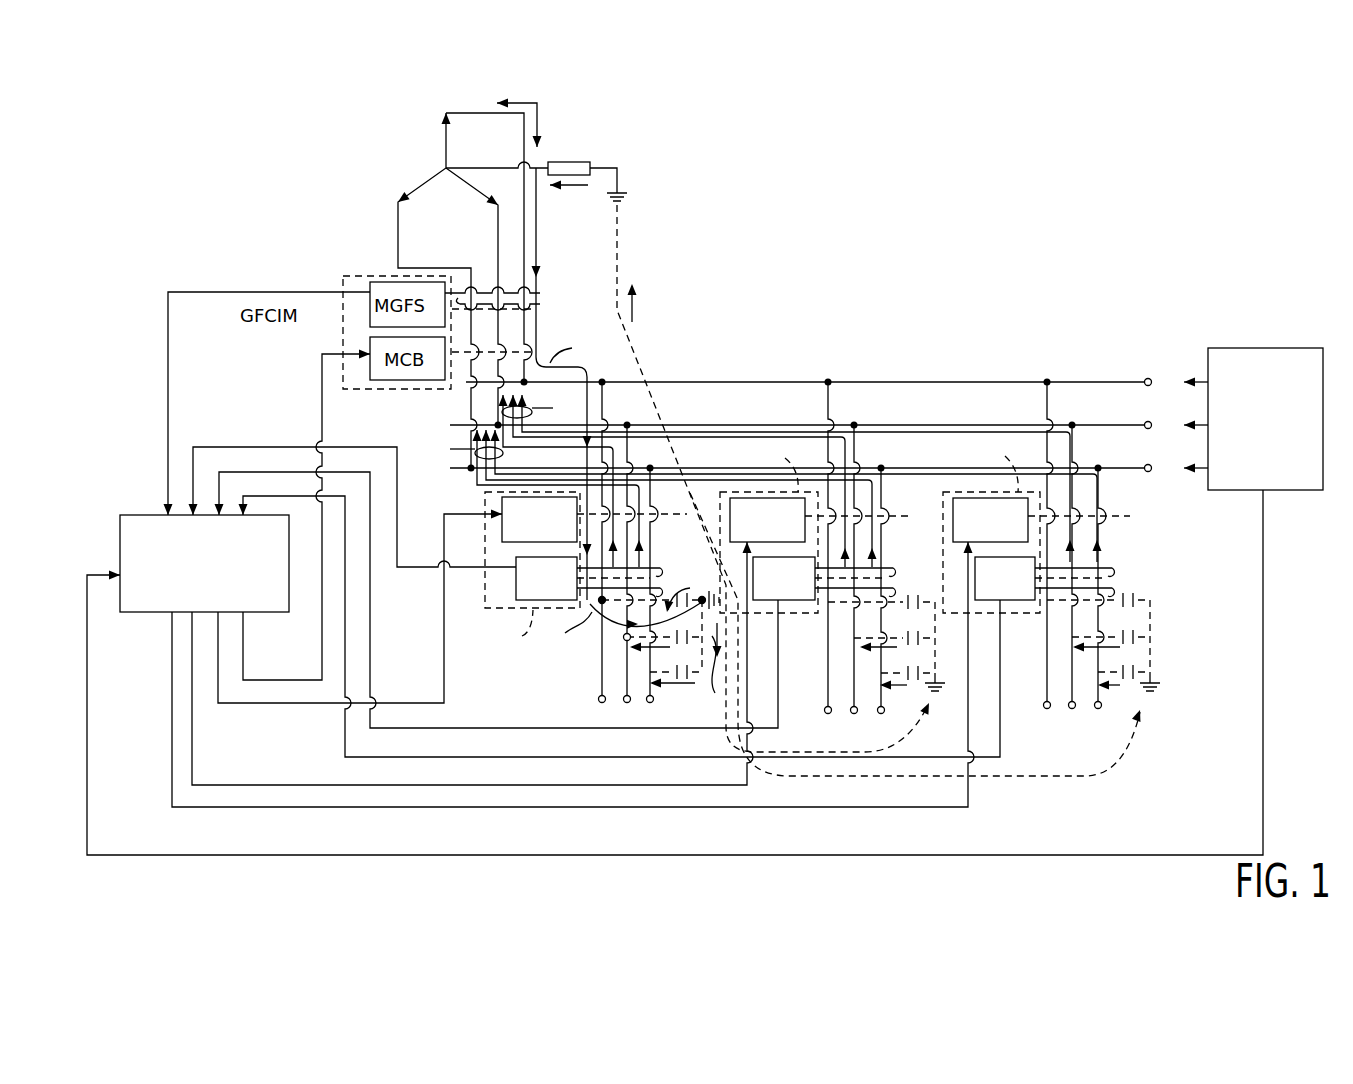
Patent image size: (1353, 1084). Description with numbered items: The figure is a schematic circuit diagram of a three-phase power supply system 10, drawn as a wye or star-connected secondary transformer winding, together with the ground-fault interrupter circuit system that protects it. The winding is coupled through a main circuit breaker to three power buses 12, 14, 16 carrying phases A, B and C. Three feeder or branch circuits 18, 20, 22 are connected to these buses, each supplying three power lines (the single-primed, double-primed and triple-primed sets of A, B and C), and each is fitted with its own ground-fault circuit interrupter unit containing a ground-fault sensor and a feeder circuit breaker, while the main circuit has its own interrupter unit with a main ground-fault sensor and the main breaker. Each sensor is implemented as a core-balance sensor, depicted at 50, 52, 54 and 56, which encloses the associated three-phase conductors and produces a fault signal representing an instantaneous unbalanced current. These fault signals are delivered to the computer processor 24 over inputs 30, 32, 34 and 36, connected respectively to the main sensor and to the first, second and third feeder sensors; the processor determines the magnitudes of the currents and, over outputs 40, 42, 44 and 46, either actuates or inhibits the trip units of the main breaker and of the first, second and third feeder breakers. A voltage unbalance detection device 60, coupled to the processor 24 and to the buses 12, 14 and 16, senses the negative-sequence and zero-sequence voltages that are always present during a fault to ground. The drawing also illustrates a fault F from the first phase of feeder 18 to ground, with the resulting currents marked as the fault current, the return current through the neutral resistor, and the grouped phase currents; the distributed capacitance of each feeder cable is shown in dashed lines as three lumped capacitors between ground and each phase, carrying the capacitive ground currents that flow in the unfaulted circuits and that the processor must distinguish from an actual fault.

The three-phase power supply system 10 is at (430, 115).
The power bus 12 is at (1122, 382).
The power bus 14 is at (1120, 424).
The power bus 16 is at (1120, 467).
The feeder or branch circuit 18 is at (592, 678).
The feeder or branch circuit 20 is at (818, 678).
The feeder or branch circuit 22 is at (1038, 661).
The computer processor 24 is at (193, 595).
The input 30 is at (167, 445).
The input 32 is at (215, 444).
The input 34 is at (260, 470).
The input 36 is at (293, 493).
The output 40 is at (245, 660).
The output 42 is at (217, 648).
The output 44 is at (190, 680).
The output 46 is at (170, 722).
The core-balance sensor 50 is at (549, 296).
The core-balance sensor 52 is at (660, 562).
The core-balance sensor 54 is at (889, 558).
The core-balance sensor 56 is at (1105, 548).
The voltage unbalance detection device 60 is at (1298, 348).